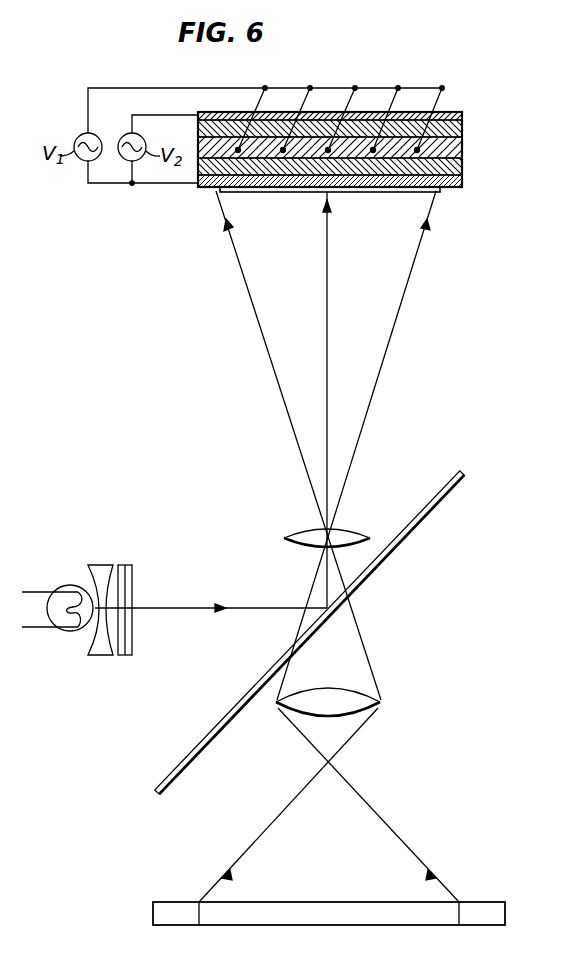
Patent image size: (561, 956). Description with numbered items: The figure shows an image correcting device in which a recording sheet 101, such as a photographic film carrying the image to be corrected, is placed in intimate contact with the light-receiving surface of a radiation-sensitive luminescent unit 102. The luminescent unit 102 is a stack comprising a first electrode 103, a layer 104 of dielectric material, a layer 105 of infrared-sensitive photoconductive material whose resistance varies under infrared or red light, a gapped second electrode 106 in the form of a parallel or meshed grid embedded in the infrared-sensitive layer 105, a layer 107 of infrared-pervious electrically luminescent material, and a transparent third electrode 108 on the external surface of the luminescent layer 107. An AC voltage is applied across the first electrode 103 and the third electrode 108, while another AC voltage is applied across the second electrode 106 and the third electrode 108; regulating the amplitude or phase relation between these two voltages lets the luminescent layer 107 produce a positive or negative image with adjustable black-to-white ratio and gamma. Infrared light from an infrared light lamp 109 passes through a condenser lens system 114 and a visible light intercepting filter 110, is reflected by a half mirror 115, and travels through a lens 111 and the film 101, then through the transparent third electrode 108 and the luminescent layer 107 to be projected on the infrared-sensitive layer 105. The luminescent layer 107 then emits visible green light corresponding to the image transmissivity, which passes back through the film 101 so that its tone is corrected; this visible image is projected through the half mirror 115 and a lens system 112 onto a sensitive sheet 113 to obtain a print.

The recording sheet 101 is at (391, 192).
The radiation-sensitive luminescent unit 102 is at (377, 107).
The first electrode 103 is at (463, 114).
The layer of dielectric material 104 is at (463, 132).
The layer of infrared-sensitive material 105 is at (450, 156).
The gapped second electrode 106 is at (450, 112).
The layer of electrically luminescent material 107 is at (453, 177).
The transparent third electrode 108 is at (447, 188).
The infrared light lamp 109 is at (70, 632).
The visible light intercepting filter 110 is at (128, 635).
The lens 111 is at (356, 537).
The lens system 112 is at (365, 710).
The sensitive sheet 113 is at (475, 901).
The condenser lens system 114 is at (100, 572).
The half mirror 115 is at (447, 488).